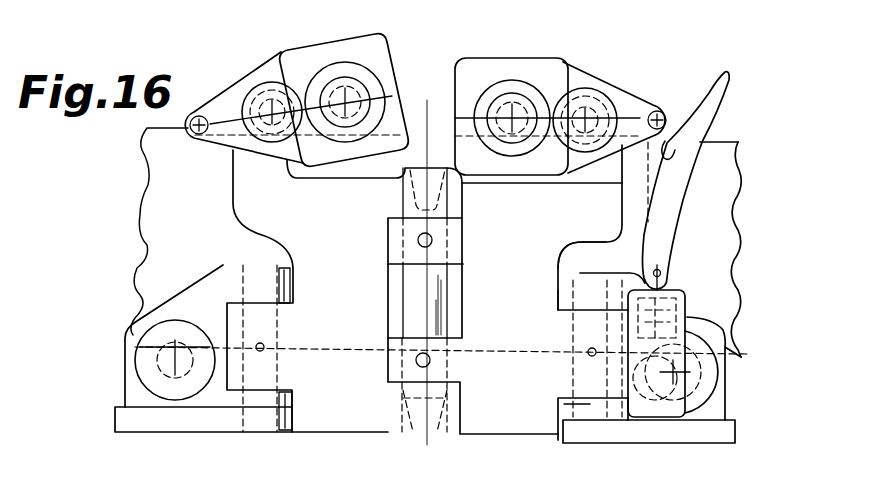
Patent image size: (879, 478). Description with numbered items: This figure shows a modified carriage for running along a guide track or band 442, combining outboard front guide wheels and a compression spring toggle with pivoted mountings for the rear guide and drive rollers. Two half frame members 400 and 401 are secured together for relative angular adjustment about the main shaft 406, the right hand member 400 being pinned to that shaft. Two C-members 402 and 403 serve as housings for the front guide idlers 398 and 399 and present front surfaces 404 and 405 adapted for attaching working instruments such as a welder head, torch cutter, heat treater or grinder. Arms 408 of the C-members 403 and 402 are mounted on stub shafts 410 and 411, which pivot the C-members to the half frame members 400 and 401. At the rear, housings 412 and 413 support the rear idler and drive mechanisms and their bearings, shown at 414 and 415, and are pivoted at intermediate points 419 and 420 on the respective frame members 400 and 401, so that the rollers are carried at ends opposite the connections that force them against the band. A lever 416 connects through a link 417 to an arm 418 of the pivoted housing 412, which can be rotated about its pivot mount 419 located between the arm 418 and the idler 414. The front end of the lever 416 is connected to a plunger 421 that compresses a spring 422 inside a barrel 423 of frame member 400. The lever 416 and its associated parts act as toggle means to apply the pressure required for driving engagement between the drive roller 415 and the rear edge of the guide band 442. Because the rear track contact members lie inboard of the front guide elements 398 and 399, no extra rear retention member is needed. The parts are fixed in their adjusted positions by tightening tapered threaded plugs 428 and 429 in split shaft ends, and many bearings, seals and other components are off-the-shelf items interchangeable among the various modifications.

The front guide idler 398 is at (728, 381).
The front guide idler 399 is at (184, 337).
The half frame member 400 is at (583, 251).
The half frame member 401 is at (258, 233).
The C-member 402 is at (720, 323).
The C-member 403 is at (168, 297).
The front surface 404 is at (697, 443).
The front surface 405 is at (165, 433).
The main shaft 406 is at (435, 305).
The arm 408 is at (283, 295).
The stub shaft 410 is at (575, 338).
The stub shaft 411 is at (277, 338).
The housing 412 is at (564, 63).
The housing 413 is at (396, 101).
The rear idler 414 is at (547, 128).
The drive roller 415 is at (366, 72).
The lever 416 is at (673, 212).
The link 417 is at (680, 160).
The arm 418 is at (660, 101).
The pivot mount 419 is at (602, 95).
The pivot 420 is at (258, 80).
The plunger 421 is at (673, 279).
The spring 422 is at (686, 299).
The barrel 423 is at (740, 348).
The tapered threaded plug 428 is at (460, 395).
The tapered threaded plug 429 is at (440, 205).
The guide track or band 442 is at (147, 128).